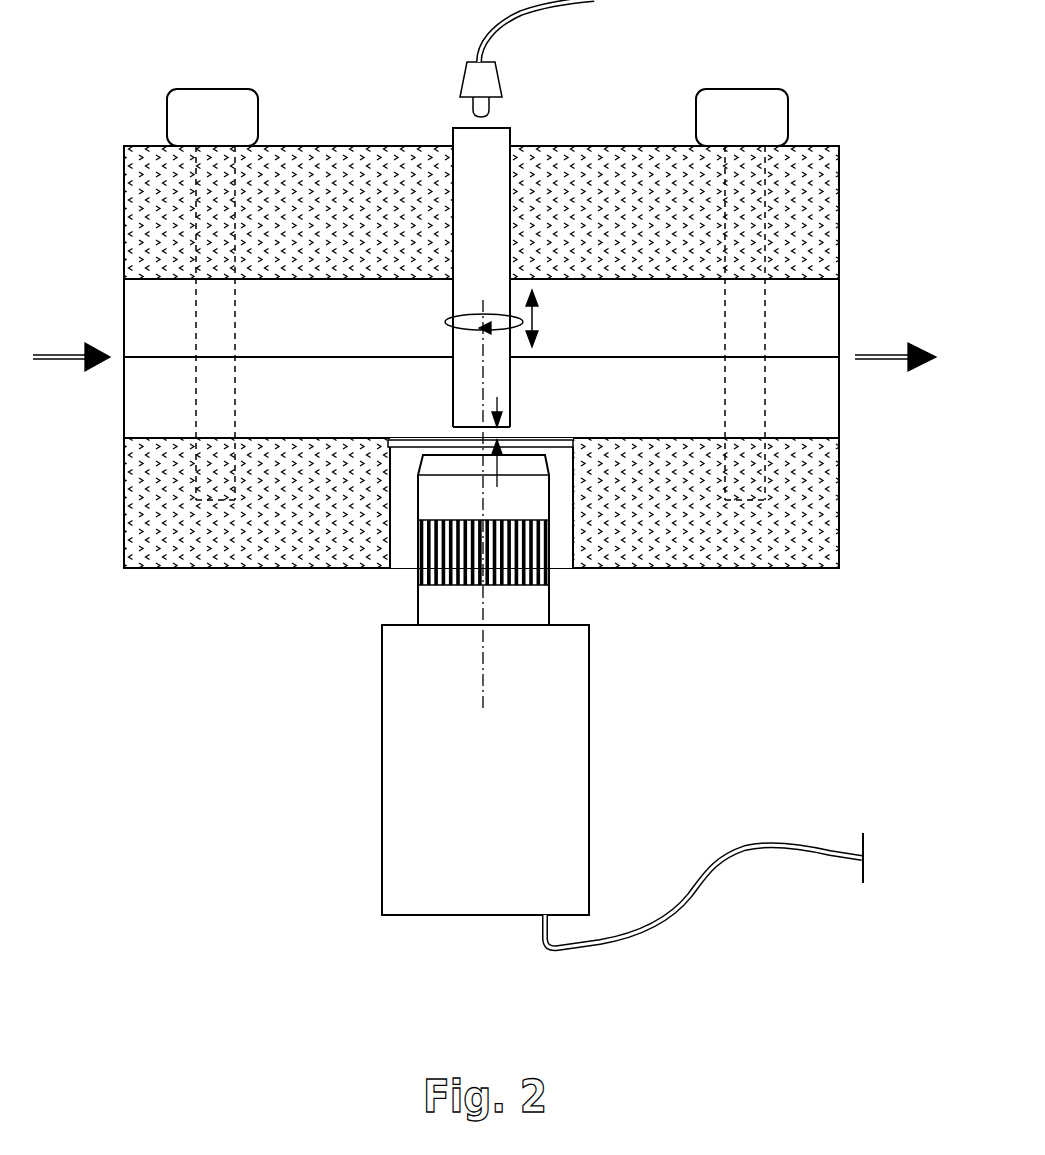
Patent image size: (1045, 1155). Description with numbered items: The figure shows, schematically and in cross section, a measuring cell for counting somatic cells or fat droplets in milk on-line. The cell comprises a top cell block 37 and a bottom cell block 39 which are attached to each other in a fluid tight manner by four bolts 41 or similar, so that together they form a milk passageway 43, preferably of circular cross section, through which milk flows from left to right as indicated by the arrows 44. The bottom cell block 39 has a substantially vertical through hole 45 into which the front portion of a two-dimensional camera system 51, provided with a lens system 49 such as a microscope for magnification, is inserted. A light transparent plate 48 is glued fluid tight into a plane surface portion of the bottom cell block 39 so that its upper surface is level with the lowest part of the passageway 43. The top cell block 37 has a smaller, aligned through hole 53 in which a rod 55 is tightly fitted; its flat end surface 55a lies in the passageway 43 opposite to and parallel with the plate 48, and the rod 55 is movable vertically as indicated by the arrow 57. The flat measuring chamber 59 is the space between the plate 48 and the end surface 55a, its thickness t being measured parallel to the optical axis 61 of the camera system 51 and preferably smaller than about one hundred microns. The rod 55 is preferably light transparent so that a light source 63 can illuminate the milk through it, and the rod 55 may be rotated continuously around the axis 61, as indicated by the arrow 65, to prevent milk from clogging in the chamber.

The top cell block 37 is at (840, 228).
The bottom cell block 39 is at (840, 473).
The bolts 41 is at (260, 100).
The milk passageway 43 is at (818, 403).
The arrows 44 is at (45, 355).
The through hole 45 is at (400, 528).
The light transparent plate 48 is at (470, 435).
The lens system 49 is at (549, 600).
The two-dimensional camera system 51 is at (589, 740).
The through hole 53 is at (452, 205).
The rod 55 is at (453, 340).
The flat end surface 55a is at (463, 430).
The arrow 57 is at (537, 315).
The flat measuring chamber 59 is at (407, 452).
The optical axis 61 is at (483, 680).
The light source 63 is at (460, 70).
The arrow 65 is at (456, 316).
The thickness t is at (497, 397).